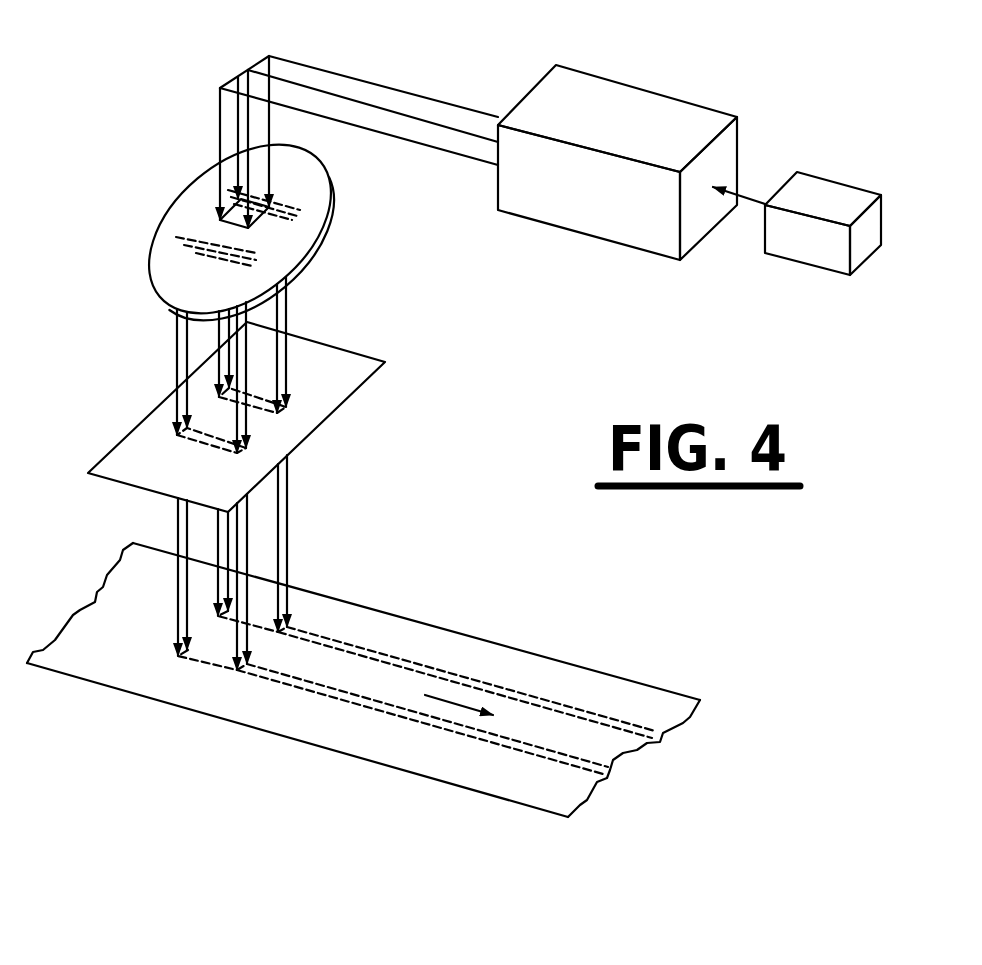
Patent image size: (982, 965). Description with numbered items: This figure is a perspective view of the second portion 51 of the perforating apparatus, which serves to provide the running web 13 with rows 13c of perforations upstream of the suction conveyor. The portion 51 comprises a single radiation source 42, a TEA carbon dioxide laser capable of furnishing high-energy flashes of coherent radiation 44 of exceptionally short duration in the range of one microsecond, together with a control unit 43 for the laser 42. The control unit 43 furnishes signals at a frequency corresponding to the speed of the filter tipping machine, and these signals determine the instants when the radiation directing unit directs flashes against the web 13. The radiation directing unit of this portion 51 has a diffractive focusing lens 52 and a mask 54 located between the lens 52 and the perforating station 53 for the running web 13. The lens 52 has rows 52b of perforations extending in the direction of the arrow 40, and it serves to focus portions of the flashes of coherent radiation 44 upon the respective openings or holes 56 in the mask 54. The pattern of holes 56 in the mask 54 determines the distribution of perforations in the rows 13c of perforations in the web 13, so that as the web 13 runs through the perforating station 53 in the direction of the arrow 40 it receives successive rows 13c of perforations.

The web 13 is at (490, 777).
The rows of perforations 13c is at (543, 698).
The arrow 40 is at (453, 703).
The source of coherent radiation 42 is at (653, 108).
The control unit 43 is at (830, 195).
The coherent radiation 44 is at (420, 95).
The second portion of the apparatus 51 is at (192, 112).
The diffractive focusing lens 52 is at (320, 248).
The rows of perforations in the lens 52b is at (305, 190).
The perforating station 53 is at (200, 667).
The mask 54 is at (302, 428).
The holes in the mask 56 is at (170, 440).